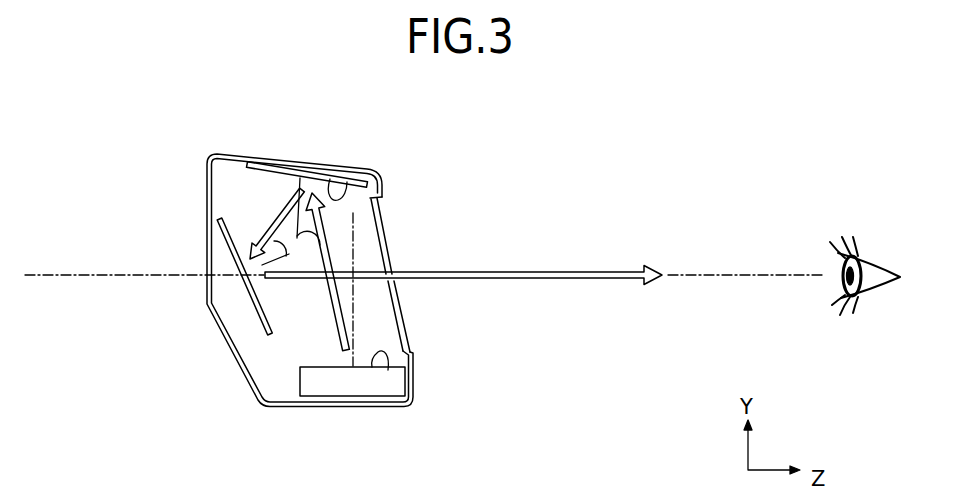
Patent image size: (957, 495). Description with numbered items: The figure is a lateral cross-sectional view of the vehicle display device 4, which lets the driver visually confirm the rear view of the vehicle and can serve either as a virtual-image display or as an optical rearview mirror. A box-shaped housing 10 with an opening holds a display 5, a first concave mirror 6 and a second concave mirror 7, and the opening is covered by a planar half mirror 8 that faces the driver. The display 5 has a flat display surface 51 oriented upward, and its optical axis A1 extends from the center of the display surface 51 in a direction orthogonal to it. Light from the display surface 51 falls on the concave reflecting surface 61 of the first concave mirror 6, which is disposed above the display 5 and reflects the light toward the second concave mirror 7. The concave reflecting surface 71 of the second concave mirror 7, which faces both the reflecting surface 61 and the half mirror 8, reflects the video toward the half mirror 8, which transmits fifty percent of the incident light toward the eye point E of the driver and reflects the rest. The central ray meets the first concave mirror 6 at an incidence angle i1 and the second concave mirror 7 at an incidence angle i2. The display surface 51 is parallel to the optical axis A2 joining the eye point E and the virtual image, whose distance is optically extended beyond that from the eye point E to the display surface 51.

The vehicle display device 4 is at (402, 134).
The display 5 is at (300, 378).
The display surface 51 is at (388, 370).
The first concave mirror 6 is at (290, 167).
The reflecting surface 61 is at (330, 179).
The second concave mirror 7 is at (228, 244).
The reflecting surface 71 is at (270, 312).
The half mirror 8 is at (402, 317).
The housing 10 is at (228, 345).
The incidence angle i1 is at (330, 250).
The incidence angle i2 is at (283, 230).
The optical axis A1 is at (355, 306).
The optical axis A2 is at (55, 273).
The eye point E is at (836, 279).